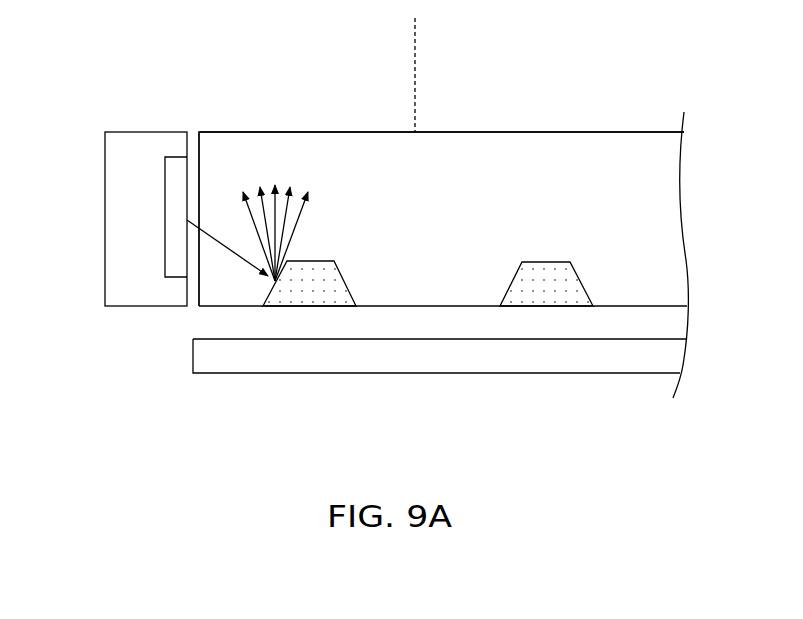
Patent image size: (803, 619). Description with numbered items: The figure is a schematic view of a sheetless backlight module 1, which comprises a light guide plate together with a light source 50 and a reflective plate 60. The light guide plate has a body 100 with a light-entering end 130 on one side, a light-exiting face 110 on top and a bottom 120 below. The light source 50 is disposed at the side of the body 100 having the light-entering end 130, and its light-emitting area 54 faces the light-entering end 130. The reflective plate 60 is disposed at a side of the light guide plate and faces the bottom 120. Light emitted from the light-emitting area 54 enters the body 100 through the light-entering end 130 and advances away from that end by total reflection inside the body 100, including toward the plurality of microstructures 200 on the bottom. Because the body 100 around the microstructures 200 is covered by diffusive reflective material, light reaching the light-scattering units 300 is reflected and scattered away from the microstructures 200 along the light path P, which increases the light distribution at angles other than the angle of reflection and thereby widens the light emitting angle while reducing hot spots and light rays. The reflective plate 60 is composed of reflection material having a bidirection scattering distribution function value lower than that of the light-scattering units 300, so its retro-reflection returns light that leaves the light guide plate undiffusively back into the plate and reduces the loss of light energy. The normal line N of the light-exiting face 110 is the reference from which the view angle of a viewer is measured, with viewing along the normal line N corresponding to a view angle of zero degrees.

The backlight module 1 is at (120, 33).
The light source 50 is at (118, 168).
The light-emitting area 54 is at (172, 163).
The reflective plate 60 is at (231, 363).
The body 100 is at (298, 142).
The light-exiting face 110 is at (451, 132).
The bottom 120 is at (435, 306).
The light-entering end 130 is at (200, 153).
The microstructures 200 is at (584, 288).
The light-scattering units 300 is at (549, 299).
The normal line N is at (415, 66).
The light path P is at (227, 247).